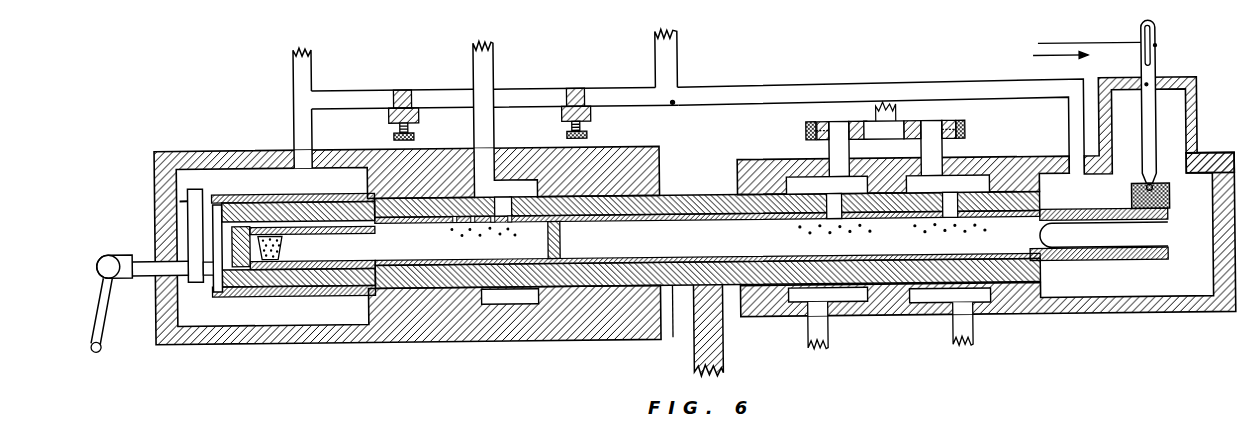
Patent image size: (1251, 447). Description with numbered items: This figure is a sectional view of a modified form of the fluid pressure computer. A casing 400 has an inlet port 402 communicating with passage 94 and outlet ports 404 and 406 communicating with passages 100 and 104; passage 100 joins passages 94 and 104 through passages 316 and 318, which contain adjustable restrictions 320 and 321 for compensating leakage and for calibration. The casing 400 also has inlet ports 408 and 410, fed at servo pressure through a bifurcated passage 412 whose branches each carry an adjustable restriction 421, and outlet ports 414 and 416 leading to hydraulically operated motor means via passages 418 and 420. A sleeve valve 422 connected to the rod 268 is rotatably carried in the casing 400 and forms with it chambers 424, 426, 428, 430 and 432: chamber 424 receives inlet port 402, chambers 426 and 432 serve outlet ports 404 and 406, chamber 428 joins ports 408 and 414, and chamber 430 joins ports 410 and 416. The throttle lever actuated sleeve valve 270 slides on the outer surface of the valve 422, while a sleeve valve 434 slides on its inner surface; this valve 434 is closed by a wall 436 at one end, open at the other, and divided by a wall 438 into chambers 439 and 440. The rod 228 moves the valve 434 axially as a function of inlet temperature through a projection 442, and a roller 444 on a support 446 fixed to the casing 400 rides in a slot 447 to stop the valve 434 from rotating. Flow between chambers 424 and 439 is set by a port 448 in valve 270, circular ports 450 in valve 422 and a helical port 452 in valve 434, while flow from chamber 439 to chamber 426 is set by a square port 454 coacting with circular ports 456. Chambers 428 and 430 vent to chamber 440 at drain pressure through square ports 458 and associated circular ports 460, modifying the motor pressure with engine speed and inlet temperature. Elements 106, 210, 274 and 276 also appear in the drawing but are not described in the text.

The passage 94 is at (295, 62).
The passage 100 is at (478, 58).
The passage 104 is at (702, 88).
The hand lever 106 is at (112, 330).
The signal line 210 is at (1074, 42).
The rod 228 is at (1159, 76).
The rod 268 is at (690, 348).
The throttle lever actuated sleeve valve 270 is at (224, 190).
The piston disc 274 is at (185, 194).
The actuating shaft 276 is at (142, 256).
The passage 316 is at (322, 94).
The passage 318 is at (548, 88).
The adjustable restriction 320 is at (400, 97).
The adjustable restriction 321 is at (586, 90).
The casing 400 is at (393, 338).
The inlet port 402 is at (324, 160).
The outlet port 404 is at (478, 170).
The outlet port 406 is at (1020, 180).
The inlet port 408 is at (805, 162).
The inlet port 410 is at (955, 200).
The bifurcated passage 412 is at (902, 120).
The outlet port 414 is at (793, 308).
The outlet port 416 is at (932, 308).
The passage 418 is at (829, 344).
The passage 420 is at (975, 336).
The adjustable restriction 421 is at (840, 122).
The sleeve valve 422 is at (692, 200).
The chamber 424 is at (292, 327).
The chamber 426 is at (517, 297).
The chamber 428 is at (768, 305).
The chamber 430 is at (1020, 292).
The chamber 432 is at (1108, 290).
The sleeve valve 434 is at (1150, 270).
The wall 436 is at (237, 270).
The wall 438 is at (563, 243).
The chamber 439 is at (398, 254).
The chamber 440 is at (738, 252).
The projection 442 is at (1205, 160).
The roller 444 is at (1079, 231).
The support 446 is at (1088, 231).
The slot 447 is at (1150, 251).
The port 448 is at (285, 199).
The circular ports 450 is at (283, 247).
The helical port 452 is at (282, 257).
The square port 454 is at (505, 205).
The circular ports 456 is at (452, 232).
The square ports 458 is at (845, 205).
The circular ports 460 is at (855, 233).